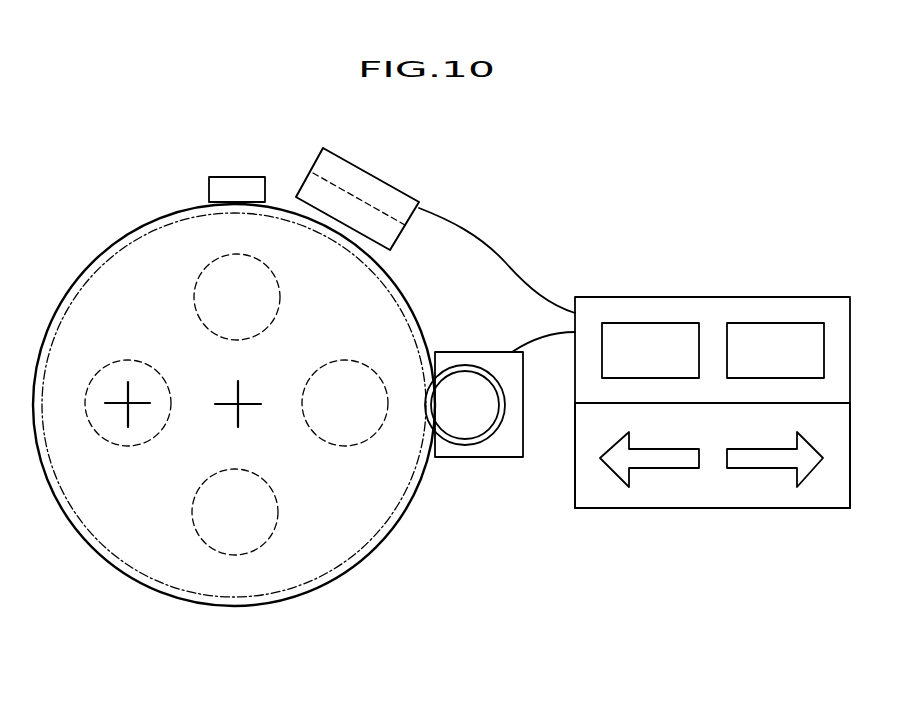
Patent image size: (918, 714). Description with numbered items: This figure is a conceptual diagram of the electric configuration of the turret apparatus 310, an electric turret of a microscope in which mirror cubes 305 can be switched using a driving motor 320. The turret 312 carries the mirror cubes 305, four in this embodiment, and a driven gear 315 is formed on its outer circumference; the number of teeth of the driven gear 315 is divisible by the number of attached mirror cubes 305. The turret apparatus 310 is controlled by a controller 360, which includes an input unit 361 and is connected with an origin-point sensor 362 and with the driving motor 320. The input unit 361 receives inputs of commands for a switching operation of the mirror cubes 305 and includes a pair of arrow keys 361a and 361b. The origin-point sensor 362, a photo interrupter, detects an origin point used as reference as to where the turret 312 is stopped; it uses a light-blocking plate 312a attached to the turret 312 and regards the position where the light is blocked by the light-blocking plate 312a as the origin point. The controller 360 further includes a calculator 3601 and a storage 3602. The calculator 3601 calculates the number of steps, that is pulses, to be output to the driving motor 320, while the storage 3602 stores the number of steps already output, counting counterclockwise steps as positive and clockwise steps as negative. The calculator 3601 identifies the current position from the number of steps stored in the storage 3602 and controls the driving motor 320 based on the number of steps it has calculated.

The turret apparatus 310 is at (490, 195).
The turret 312 is at (186, 591).
The light-blocking plate 312a is at (245, 184).
The driven gear 315 is at (328, 584).
The mirror cubes 305 is at (130, 360).
The driving motor 320 is at (475, 458).
The controller 360 is at (714, 297).
The calculator 3601 is at (655, 322).
The storage 3602 is at (779, 322).
The input unit 361 is at (708, 508).
The arrow key 361a is at (648, 469).
The arrow key 361b is at (774, 469).
The origin-point sensor 362 is at (385, 189).